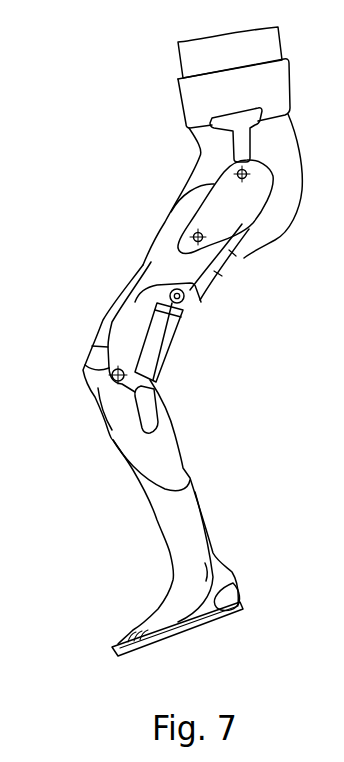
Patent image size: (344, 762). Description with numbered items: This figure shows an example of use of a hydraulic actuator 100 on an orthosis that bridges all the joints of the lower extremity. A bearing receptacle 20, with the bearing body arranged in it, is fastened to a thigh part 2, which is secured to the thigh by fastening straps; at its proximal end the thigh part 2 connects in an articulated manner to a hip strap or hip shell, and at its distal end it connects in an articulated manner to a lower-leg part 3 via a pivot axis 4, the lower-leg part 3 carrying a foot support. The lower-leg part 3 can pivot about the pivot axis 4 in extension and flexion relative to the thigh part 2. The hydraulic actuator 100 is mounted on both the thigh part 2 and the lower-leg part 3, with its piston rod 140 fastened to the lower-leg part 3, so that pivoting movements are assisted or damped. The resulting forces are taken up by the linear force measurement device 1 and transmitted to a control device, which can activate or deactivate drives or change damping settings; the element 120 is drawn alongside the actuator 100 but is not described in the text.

The linear force measurement device 1 is at (190, 306).
The thigh part 2 is at (135, 300).
The lower-leg part 3 is at (167, 436).
The pivot axis 4 is at (110, 373).
The bearing receptacle 20 is at (185, 297).
The hydraulic actuator 100 is at (171, 353).
The piston rod 120 is at (187, 303).
The piston rod 140 is at (156, 384).